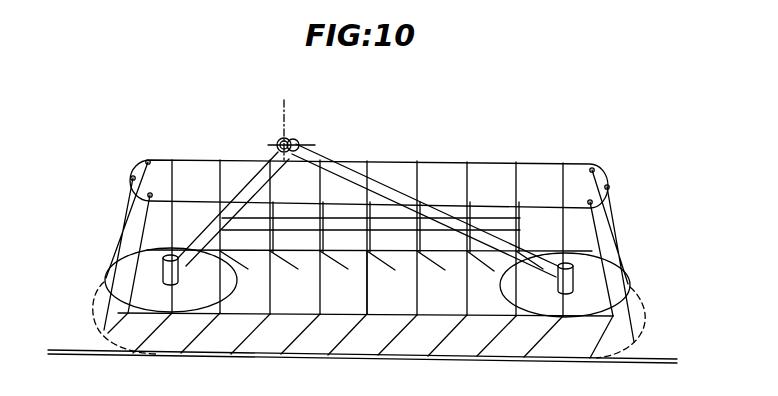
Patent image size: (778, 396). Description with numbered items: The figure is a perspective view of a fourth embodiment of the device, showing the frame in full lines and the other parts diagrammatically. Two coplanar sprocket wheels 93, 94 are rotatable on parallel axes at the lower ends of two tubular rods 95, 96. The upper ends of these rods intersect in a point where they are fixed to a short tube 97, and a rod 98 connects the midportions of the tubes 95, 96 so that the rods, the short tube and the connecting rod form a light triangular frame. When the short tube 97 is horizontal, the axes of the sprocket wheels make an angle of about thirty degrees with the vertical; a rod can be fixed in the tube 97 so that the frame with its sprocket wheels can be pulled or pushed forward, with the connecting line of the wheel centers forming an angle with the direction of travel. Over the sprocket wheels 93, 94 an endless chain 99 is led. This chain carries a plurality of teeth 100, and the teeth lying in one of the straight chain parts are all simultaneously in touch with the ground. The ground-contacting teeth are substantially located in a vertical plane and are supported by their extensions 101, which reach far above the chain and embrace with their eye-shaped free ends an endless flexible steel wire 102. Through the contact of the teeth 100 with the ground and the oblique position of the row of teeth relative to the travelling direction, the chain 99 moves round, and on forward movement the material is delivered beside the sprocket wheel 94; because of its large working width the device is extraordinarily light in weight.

The sprocket wheel 93 is at (152, 298).
The sprocket wheel 94 is at (582, 302).
The tubular rod 95 is at (214, 234).
The tubular rod 96 is at (504, 216).
The short tube 97 is at (291, 138).
The rod 98 is at (284, 219).
The chain 99 is at (354, 289).
The teeth 100 is at (344, 324).
The extensions 101 is at (364, 295).
The endless flexible steel wire 102 is at (313, 185).